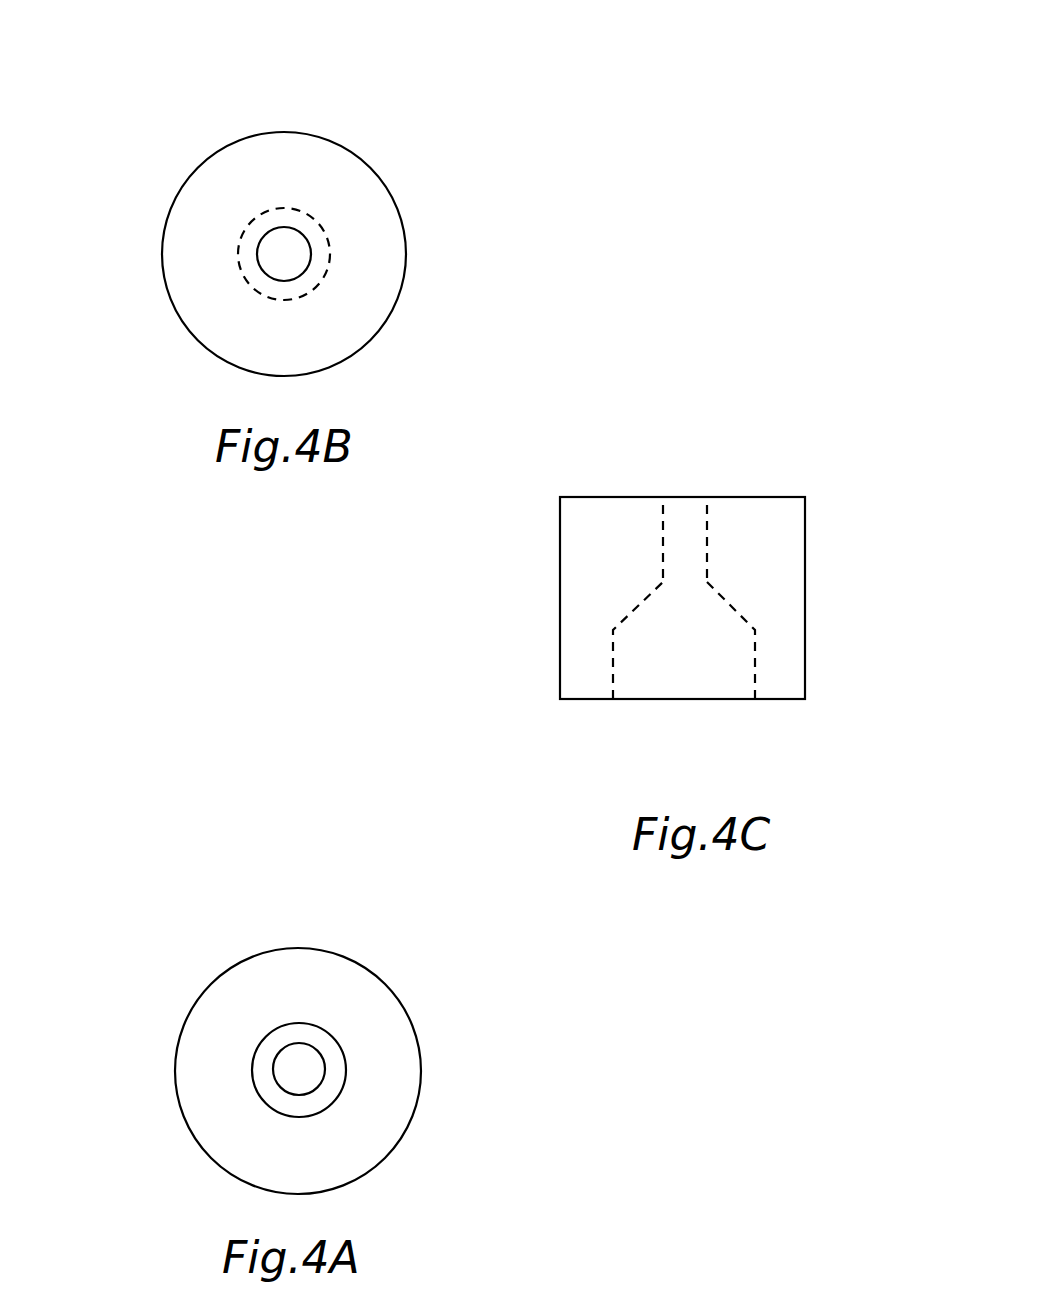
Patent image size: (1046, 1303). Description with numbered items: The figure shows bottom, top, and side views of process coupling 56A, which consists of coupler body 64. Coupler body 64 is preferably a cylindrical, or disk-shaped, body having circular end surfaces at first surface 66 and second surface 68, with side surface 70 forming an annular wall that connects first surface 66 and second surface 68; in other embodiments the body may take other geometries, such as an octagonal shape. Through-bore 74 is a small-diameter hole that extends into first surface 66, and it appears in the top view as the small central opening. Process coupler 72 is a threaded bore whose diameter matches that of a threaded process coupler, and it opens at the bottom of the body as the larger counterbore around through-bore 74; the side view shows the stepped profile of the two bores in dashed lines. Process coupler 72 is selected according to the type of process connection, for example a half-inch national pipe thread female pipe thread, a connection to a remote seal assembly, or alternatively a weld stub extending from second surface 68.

In FIG. 4B, the process coupling 56A is at (300, 78).
In FIG. 4C, the process coupling 56A is at (510, 565).
In FIG. 4A, the process coupling 56A is at (203, 938).
In FIG. 4B, the coupler body 64 is at (168, 188).
In FIG. 4C, the coupler body 64 is at (820, 658).
In FIG. 4A, the coupler body 64 is at (166, 1041).
In FIG. 4B, the first surface 66 is at (371, 221).
In FIG. 4C, the first surface 66 is at (737, 496).
In FIG. 4C, the second surface 68 is at (772, 701).
In FIG. 4A, the second surface 68 is at (348, 1003).
In FIG. 4B, the side surface 70 is at (360, 350).
In FIG. 4C, the side surface 70 is at (763, 548).
In FIG. 4A, the side surface 70 is at (357, 1177).
In FIG. 4C, the process coupler 72 is at (613, 665).
In FIG. 4A, the process coupler 72 is at (347, 1068).
In FIG. 4B, the through-bore 74 is at (272, 231).
In FIG. 4C, the through-bore 74 is at (665, 547).
In FIG. 4A, the through-bore 74 is at (276, 1068).